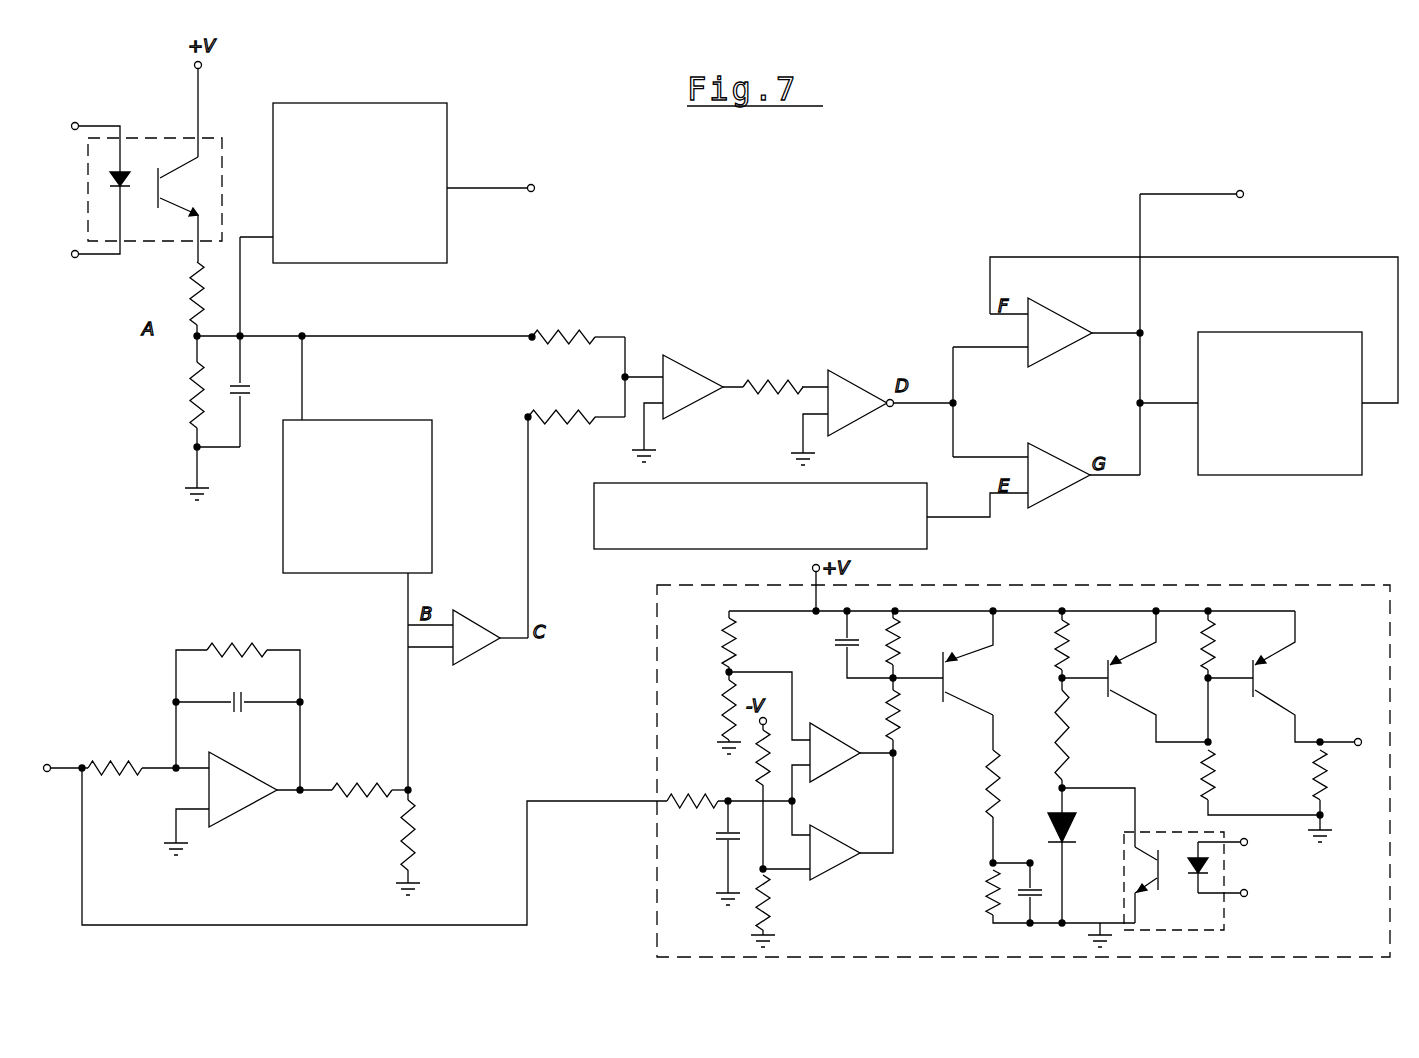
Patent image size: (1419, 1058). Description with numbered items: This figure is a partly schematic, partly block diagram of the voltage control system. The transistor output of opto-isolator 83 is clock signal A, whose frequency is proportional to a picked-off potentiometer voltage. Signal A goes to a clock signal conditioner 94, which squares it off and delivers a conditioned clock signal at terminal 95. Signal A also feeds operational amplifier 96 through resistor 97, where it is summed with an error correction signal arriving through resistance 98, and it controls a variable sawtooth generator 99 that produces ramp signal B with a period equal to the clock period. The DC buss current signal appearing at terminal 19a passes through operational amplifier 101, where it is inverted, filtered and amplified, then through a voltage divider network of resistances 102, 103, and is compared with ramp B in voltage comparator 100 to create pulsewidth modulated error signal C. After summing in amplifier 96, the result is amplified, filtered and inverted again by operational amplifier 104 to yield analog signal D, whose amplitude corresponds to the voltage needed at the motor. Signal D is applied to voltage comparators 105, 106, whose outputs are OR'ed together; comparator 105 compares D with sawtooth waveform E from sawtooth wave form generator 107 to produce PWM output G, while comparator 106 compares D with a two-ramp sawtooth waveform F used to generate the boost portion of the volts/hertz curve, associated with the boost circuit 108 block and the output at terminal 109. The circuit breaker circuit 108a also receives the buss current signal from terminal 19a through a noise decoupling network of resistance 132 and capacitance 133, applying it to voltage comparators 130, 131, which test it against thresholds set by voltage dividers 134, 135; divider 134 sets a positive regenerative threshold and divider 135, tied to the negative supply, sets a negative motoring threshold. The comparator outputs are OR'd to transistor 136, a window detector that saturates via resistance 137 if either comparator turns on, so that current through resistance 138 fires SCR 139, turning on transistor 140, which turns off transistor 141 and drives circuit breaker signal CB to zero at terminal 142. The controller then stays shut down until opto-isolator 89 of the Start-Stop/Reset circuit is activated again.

The terminal 19a is at (61, 752).
The opto-isolator 83 is at (150, 138).
The opto-isolator 89 is at (1153, 830).
The clock signal conditioner 94 is at (450, 122).
The terminal 95 is at (545, 171).
The operational amplifier 96 is at (690, 373).
The resistor 97 is at (562, 336).
The resistance 98 is at (568, 430).
The variable sawtooth generator 99 is at (368, 420).
The voltage comparator 100 is at (478, 624).
The operational amplifier 101 is at (256, 820).
The resistance 102 is at (356, 785).
The resistance 103 is at (414, 850).
The operational amplifier 104 is at (862, 382).
The voltage comparator 105 is at (1052, 452).
The voltage comparator 106 is at (1060, 328).
The sawtooth wave form generator 107 is at (888, 493).
The boost circuit 108 is at (1327, 332).
The circuit breaker circuit 108a is at (1179, 588).
The output terminal 109 is at (1254, 181).
The voltage comparator 130 is at (838, 740).
The voltage comparator 131 is at (838, 842).
The resistance 132 is at (682, 797).
The capacitance 133 is at (714, 835).
The voltage divider 134 is at (726, 672).
The voltage divider 135 is at (768, 873).
The transistor 136 is at (957, 678).
The resistance 137 is at (895, 728).
The resistance 138 is at (998, 792).
The SCR 139 is at (1068, 838).
The transistor 140 is at (1117, 677).
The transistor 141 is at (1268, 677).
The terminal 142 is at (1357, 738).